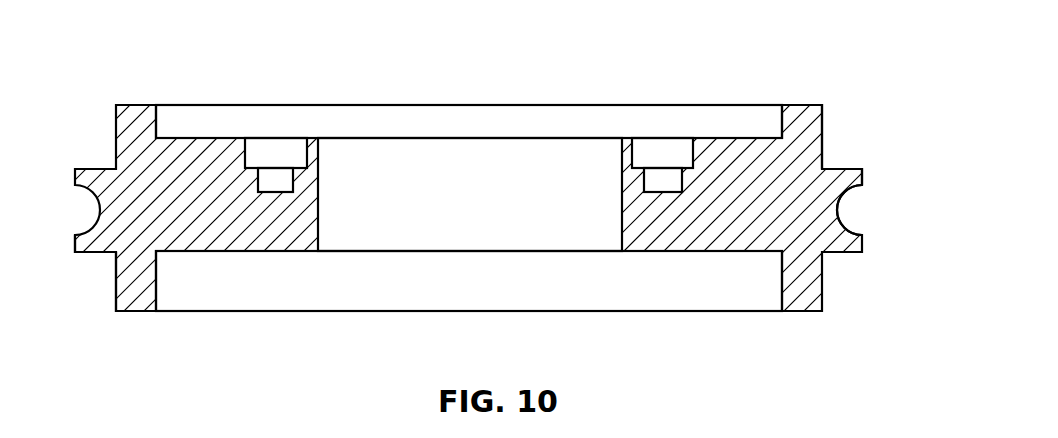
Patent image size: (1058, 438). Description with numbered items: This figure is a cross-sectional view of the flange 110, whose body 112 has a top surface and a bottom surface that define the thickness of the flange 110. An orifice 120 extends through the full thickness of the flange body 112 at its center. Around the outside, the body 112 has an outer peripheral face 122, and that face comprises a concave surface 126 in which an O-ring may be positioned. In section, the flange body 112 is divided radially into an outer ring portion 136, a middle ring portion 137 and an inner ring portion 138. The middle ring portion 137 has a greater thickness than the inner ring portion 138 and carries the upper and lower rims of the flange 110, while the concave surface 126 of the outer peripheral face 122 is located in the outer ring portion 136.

The flange 110 is at (182, 55).
The flange body 112 is at (813, 133).
The orifice 120 is at (481, 211).
The outer peripheral face 122 is at (871, 172).
The concave surface 126 is at (856, 207).
The outer ring portion 136 is at (93, 280).
The middle ring portion 137 is at (137, 332).
The inner ring portion 138 is at (244, 270).